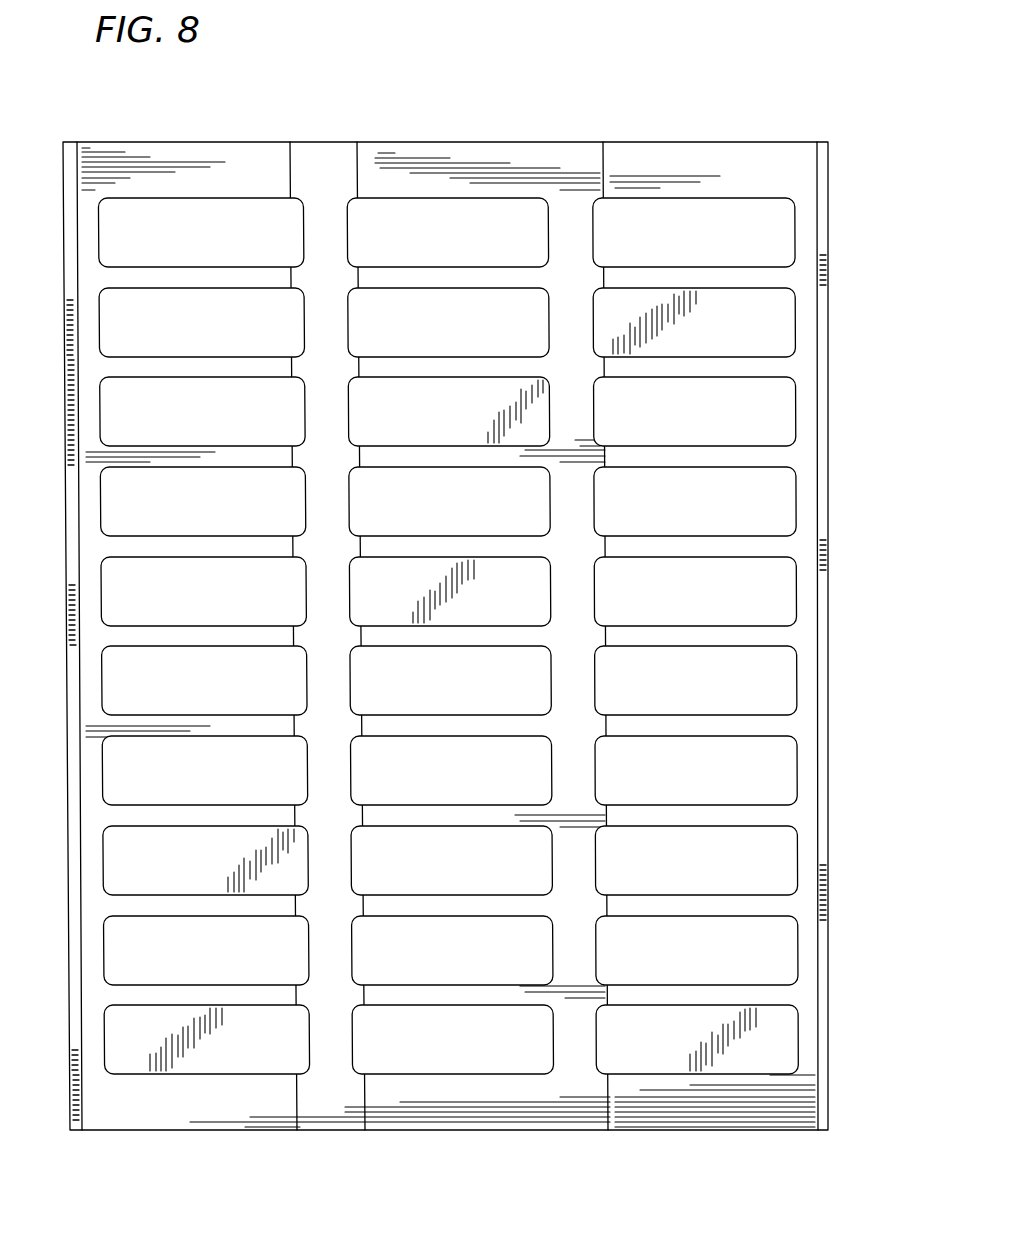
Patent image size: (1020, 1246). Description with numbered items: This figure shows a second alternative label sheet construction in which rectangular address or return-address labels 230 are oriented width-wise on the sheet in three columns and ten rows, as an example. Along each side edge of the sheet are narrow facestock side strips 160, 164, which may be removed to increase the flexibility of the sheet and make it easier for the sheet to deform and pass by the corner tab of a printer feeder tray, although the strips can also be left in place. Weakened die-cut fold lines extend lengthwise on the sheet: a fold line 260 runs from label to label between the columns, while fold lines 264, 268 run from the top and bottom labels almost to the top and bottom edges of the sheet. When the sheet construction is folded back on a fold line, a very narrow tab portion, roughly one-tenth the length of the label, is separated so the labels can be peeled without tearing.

The facestock side strip 160 is at (77, 884).
The facestock side strip 164 is at (822, 842).
The rectangular label 230 is at (508, 237).
The weakened fold line 260 is at (362, 280).
The weakened fold line 264 is at (292, 170).
The weakened fold line 268 is at (297, 1090).